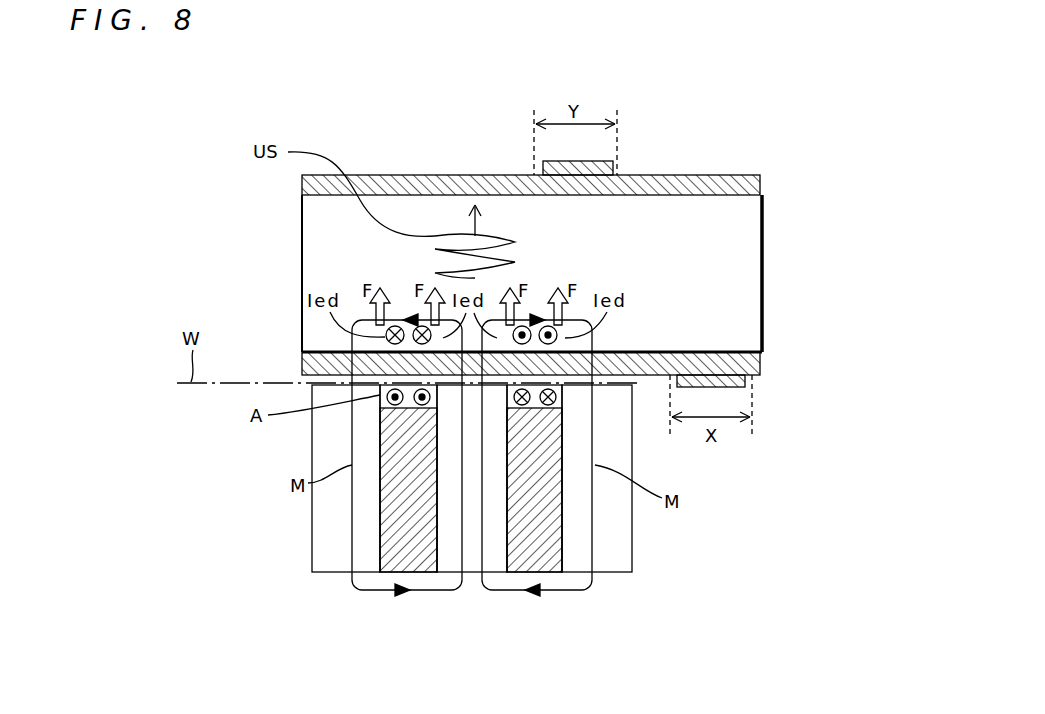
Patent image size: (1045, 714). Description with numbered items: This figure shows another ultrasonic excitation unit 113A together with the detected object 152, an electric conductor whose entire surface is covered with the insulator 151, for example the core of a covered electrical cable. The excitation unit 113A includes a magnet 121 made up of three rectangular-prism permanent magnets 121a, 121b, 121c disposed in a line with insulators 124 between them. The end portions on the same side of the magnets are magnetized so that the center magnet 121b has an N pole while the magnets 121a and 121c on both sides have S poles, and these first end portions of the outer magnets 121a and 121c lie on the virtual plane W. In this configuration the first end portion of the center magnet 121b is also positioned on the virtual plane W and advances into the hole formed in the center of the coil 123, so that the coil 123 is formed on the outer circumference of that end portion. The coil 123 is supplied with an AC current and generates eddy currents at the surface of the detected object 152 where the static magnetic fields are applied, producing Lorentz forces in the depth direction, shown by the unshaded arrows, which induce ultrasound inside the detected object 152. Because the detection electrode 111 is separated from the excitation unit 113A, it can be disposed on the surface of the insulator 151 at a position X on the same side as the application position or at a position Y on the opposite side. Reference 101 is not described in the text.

The eddy current sensor 101 is at (486, 110).
The detection electrode 111 is at (612, 165).
The ultrasonic excitation unit 113A is at (244, 491).
The magnet 121 is at (472, 537).
The magnet 121a is at (362, 574).
The magnet 121b is at (472, 574).
The magnet 121c is at (597, 514).
The coil 123 is at (380, 400).
The insulator 124 is at (415, 574).
The insulator 151 is at (762, 180).
The detected object 152 is at (762, 280).